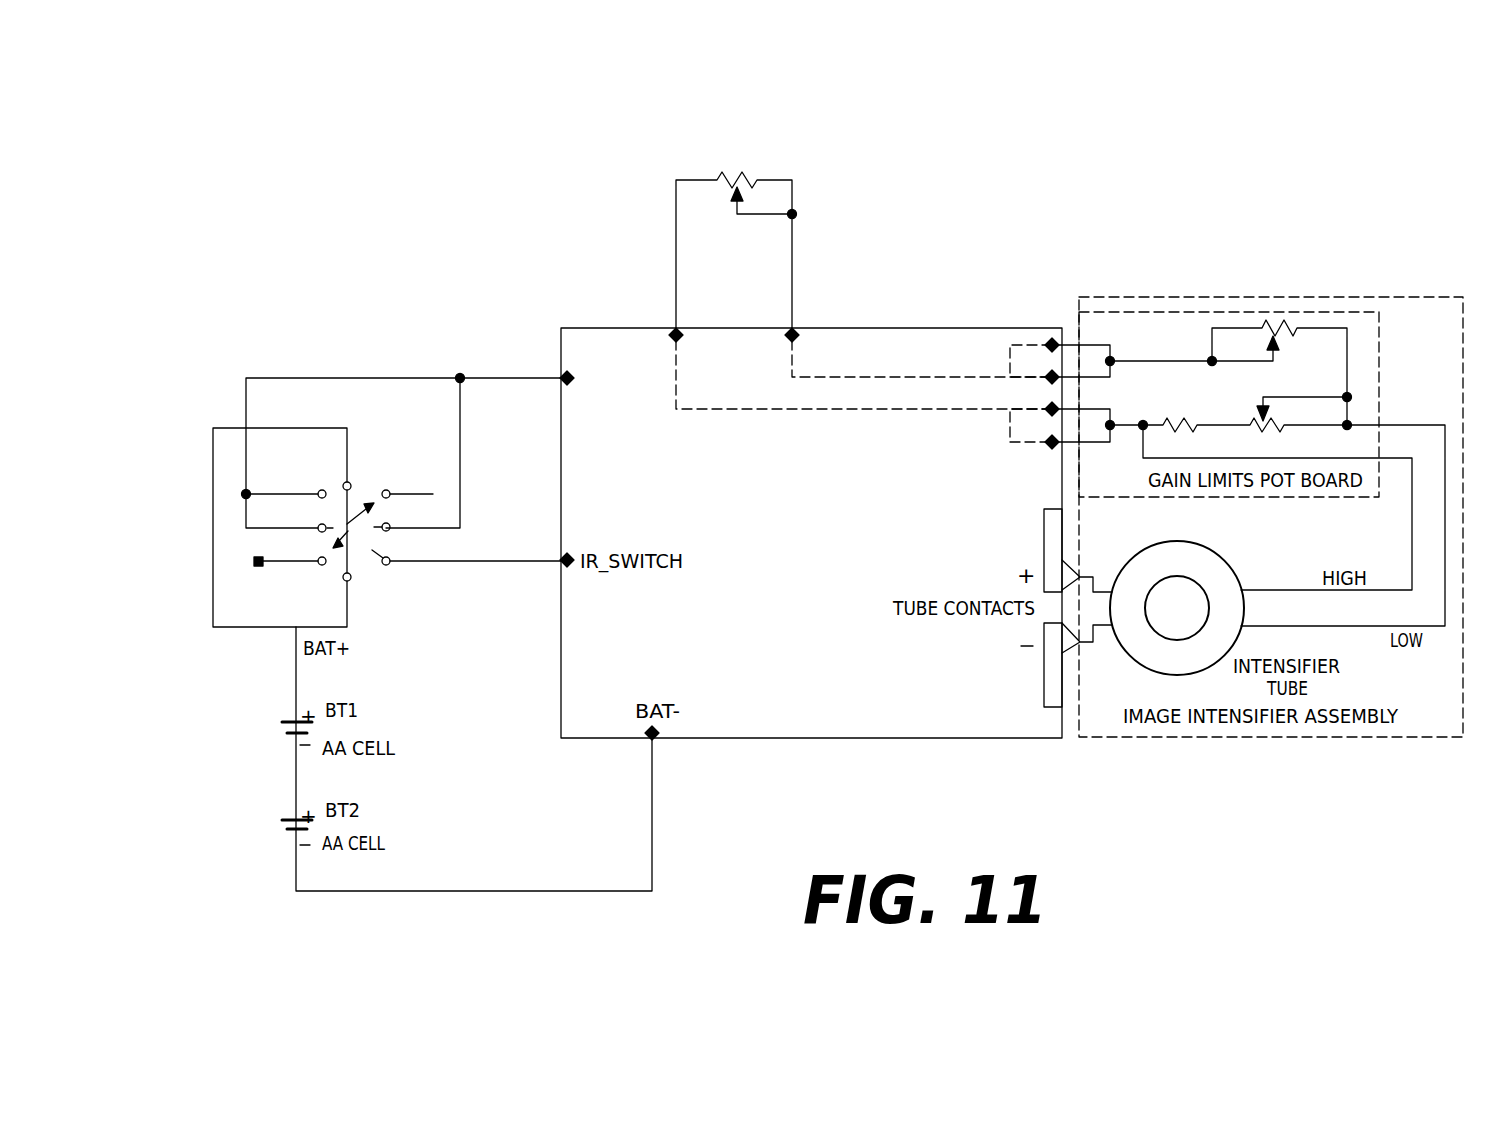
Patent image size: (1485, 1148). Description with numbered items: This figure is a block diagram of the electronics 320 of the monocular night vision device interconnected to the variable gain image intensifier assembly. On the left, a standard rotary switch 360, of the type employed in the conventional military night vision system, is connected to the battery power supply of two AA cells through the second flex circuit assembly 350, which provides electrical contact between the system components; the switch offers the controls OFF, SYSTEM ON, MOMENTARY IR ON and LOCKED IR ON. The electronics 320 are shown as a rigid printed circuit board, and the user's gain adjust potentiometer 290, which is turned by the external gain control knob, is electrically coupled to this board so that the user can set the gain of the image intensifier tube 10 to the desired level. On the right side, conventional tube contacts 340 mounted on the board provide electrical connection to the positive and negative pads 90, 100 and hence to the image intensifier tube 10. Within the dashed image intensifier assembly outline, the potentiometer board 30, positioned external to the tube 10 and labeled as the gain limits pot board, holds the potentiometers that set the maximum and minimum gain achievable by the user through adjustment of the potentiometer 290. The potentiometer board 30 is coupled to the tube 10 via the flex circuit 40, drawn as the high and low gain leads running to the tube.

The image intensifier tube 10 is at (1222, 548).
The potentiometer board 30 is at (1357, 332).
The flex circuit 40 is at (1294, 525).
The pad 90 is at (1079, 575).
The pad 100 is at (1082, 645).
The potentiometer 290 is at (792, 198).
The electronics 320 is at (918, 328).
The tube contacts 340 is at (1044, 543).
The second flex circuit assembly 350 is at (490, 380).
The rotary switch 360 is at (213, 528).